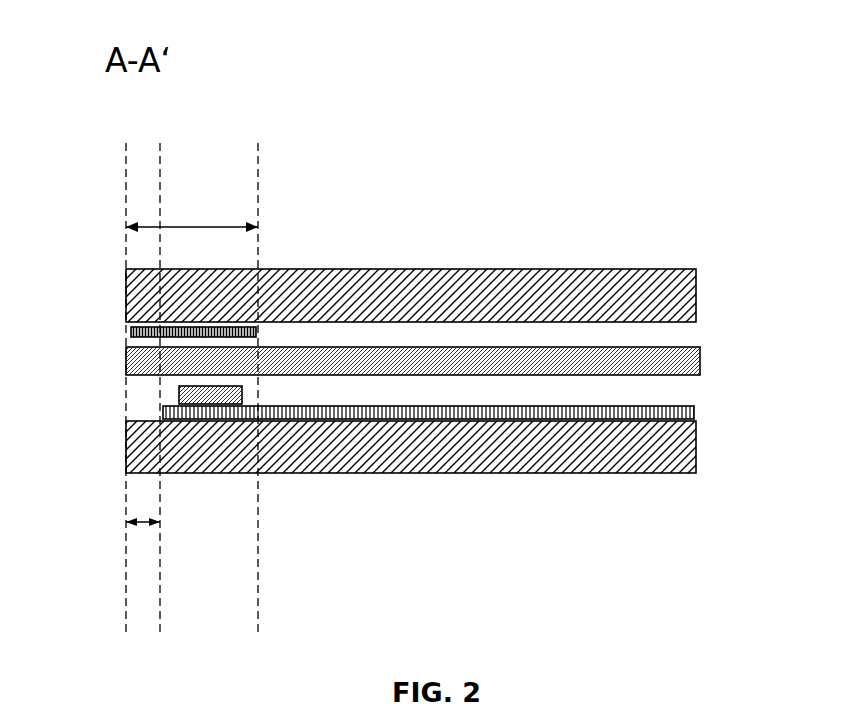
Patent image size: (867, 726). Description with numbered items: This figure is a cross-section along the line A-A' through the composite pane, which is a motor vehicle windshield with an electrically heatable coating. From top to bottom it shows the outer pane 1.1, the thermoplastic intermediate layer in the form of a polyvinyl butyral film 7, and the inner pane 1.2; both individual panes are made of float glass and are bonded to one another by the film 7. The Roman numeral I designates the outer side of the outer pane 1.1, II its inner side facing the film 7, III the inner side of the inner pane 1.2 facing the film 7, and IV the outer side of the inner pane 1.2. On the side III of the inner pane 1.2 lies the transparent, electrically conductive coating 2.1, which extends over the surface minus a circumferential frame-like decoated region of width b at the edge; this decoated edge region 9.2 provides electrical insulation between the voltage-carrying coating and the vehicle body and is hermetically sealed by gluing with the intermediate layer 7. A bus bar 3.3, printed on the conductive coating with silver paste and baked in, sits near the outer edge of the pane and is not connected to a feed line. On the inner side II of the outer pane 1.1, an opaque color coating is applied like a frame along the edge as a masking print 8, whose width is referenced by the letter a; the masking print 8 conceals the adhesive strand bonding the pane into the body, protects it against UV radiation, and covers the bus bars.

The outer pane 1.1 is at (605, 285).
The inner pane 1.2 is at (655, 448).
The electrically conductive coating 2.1 is at (693, 421).
The bus bar 3.3 is at (183, 394).
The polyvinyl butyral film 7 is at (680, 362).
The masking print 8 is at (143, 331).
The coating-free edge region 9.2 is at (105, 418).
The outer side of the outer pane I is at (491, 260).
The inner side of the outer pane II is at (666, 331).
The inner side of the inner pane III is at (651, 411).
The outer side of the inner pane IV is at (464, 482).
The width of the masking print a is at (192, 215).
The width of the decoated region b is at (143, 548).